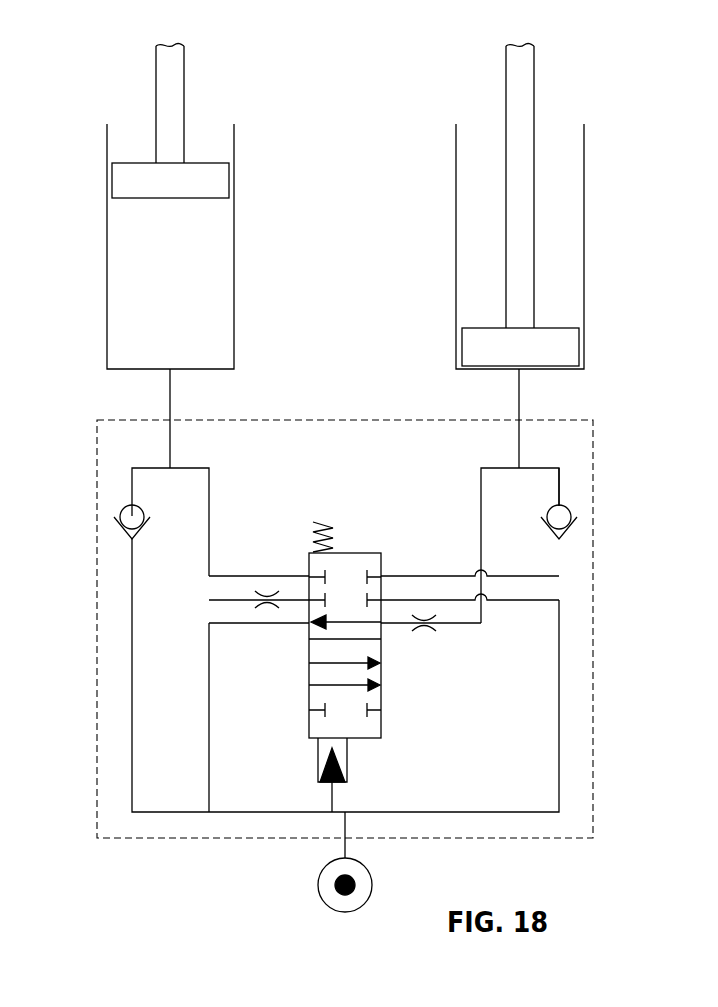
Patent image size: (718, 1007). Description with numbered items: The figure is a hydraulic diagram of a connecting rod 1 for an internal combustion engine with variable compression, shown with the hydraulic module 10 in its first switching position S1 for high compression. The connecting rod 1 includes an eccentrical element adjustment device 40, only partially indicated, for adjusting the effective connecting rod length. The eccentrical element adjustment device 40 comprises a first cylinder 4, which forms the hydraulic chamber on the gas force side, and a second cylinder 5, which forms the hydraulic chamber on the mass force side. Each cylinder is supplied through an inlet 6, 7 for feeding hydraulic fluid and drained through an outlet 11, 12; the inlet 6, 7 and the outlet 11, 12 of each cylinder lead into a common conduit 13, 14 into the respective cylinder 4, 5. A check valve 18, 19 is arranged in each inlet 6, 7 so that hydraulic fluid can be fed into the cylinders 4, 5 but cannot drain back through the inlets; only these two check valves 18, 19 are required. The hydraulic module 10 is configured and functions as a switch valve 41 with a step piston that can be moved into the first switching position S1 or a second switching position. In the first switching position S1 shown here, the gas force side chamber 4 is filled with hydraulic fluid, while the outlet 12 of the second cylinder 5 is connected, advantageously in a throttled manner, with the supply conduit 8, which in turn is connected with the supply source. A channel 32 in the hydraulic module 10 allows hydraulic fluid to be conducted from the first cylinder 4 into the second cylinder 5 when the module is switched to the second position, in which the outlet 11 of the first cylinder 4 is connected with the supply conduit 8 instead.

The connecting rod 1 is at (619, 167).
The eccentrical element adjustment device 40 is at (617, 237).
The first cylinder 4 is at (142, 260).
The second cylinder 5 is at (583, 366).
The common conduit 13 is at (169, 398).
The common conduit 14 is at (521, 397).
The outlet 11 is at (209, 484).
The outlet 12 is at (481, 487).
The inlet 7 is at (559, 490).
The check valve 18 is at (118, 530).
The check valve 19 is at (572, 529).
The channel 32 is at (258, 577).
The inlet 6 is at (132, 690).
The hydraulic module 10 is at (593, 657).
The switch valve 41 is at (381, 696).
The first switching position S1 is at (406, 671).
The supply conduit 8 is at (347, 826).